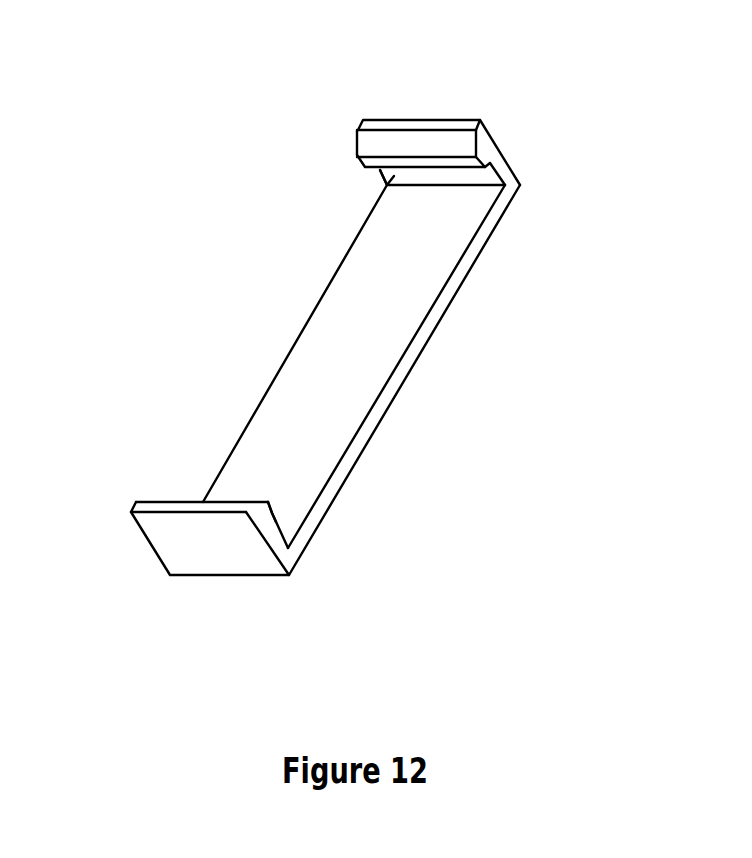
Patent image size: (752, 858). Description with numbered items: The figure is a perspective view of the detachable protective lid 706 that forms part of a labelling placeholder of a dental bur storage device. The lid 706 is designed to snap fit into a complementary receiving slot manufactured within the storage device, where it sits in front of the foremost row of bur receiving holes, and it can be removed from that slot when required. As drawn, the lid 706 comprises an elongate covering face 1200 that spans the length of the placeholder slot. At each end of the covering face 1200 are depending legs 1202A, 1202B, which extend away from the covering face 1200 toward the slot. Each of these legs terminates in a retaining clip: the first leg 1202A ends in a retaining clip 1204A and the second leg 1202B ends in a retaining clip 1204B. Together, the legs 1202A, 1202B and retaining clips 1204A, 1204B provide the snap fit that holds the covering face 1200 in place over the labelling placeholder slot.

The detachable protective lid 706 is at (115, 168).
The covering face 1200 is at (385, 418).
The depending leg 1202A is at (195, 545).
The depending leg 1202B is at (505, 170).
The retaining clip 1204A is at (273, 512).
The retaining clip 1204B is at (397, 163).